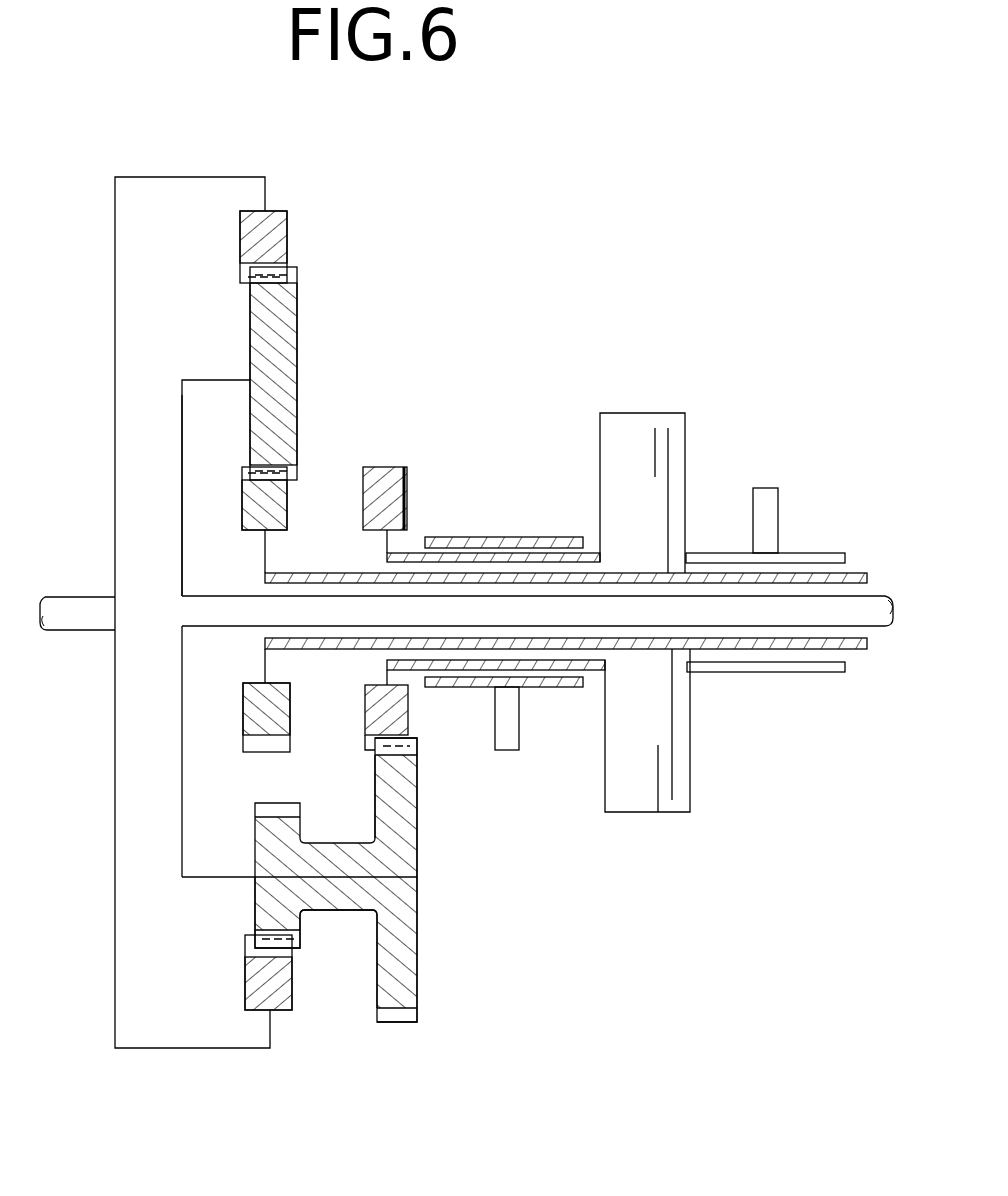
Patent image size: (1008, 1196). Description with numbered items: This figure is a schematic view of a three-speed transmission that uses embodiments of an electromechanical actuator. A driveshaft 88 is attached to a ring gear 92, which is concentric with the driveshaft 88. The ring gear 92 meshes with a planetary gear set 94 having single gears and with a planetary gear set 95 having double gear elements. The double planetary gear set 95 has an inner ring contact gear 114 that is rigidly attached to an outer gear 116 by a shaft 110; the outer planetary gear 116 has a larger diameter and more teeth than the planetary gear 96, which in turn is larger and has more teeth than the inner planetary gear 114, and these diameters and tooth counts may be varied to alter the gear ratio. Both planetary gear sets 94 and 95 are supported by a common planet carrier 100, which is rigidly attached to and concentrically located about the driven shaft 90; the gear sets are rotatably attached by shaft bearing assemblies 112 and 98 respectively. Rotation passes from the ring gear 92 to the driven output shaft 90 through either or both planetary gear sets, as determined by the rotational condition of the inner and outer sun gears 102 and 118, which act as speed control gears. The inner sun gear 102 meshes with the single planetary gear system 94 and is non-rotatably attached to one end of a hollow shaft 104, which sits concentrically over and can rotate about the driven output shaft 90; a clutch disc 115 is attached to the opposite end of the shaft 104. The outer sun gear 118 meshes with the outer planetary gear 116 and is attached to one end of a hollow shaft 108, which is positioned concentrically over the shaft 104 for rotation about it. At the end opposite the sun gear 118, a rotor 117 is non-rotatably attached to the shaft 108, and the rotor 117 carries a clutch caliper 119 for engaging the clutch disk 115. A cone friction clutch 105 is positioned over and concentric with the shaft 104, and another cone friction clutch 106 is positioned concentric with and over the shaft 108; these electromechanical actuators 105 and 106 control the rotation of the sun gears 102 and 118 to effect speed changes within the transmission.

The driveshaft 88 is at (95, 597).
The driven shaft 90 is at (882, 590).
The ring gear 92 is at (193, 178).
The planetary gear set 94 is at (236, 276).
The planetary gear set 95 is at (371, 888).
The planetary gear 96 is at (300, 346).
The shaft bearing assembly 98 is at (269, 633).
The planet carrier 100 is at (178, 455).
The inner sun gear 102 is at (243, 510).
The hollow shaft 104 is at (340, 570).
The cone friction clutch 105 is at (766, 488).
The cone friction clutch 106 is at (519, 750).
The hollow shaft 108 is at (408, 545).
The shaft 110 is at (348, 916).
The shaft bearing assembly 112 is at (213, 877).
The inner ring contact gear 114 is at (305, 948).
The clutch disc 115 is at (668, 527).
The outer gear 116 is at (418, 800).
The rotor 117 is at (613, 475).
The outer sun gear 118 is at (410, 480).
The clutch caliper 119 is at (690, 795).